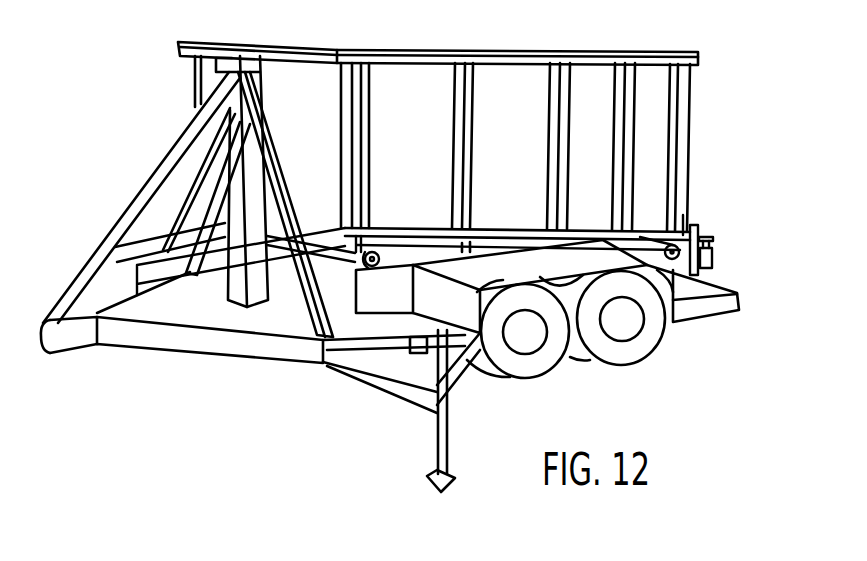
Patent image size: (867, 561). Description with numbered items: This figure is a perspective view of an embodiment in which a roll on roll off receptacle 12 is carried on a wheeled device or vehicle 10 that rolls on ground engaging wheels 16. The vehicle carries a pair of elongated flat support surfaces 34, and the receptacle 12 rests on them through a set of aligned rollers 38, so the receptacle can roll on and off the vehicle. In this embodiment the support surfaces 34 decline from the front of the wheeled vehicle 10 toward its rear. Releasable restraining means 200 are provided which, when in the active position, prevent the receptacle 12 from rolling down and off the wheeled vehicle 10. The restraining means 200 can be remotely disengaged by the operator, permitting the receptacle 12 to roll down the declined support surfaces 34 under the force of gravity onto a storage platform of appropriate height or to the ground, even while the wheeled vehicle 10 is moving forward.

The wheeled device or vehicle 10 is at (216, 386).
The roll on roll off receptacle 12 is at (704, 96).
The ground engaging wheels 16 is at (650, 345).
The elongated flat support surfaces 34 is at (398, 258).
The aligned rollers 38 is at (377, 268).
The releasable restraining means 200 is at (697, 228).